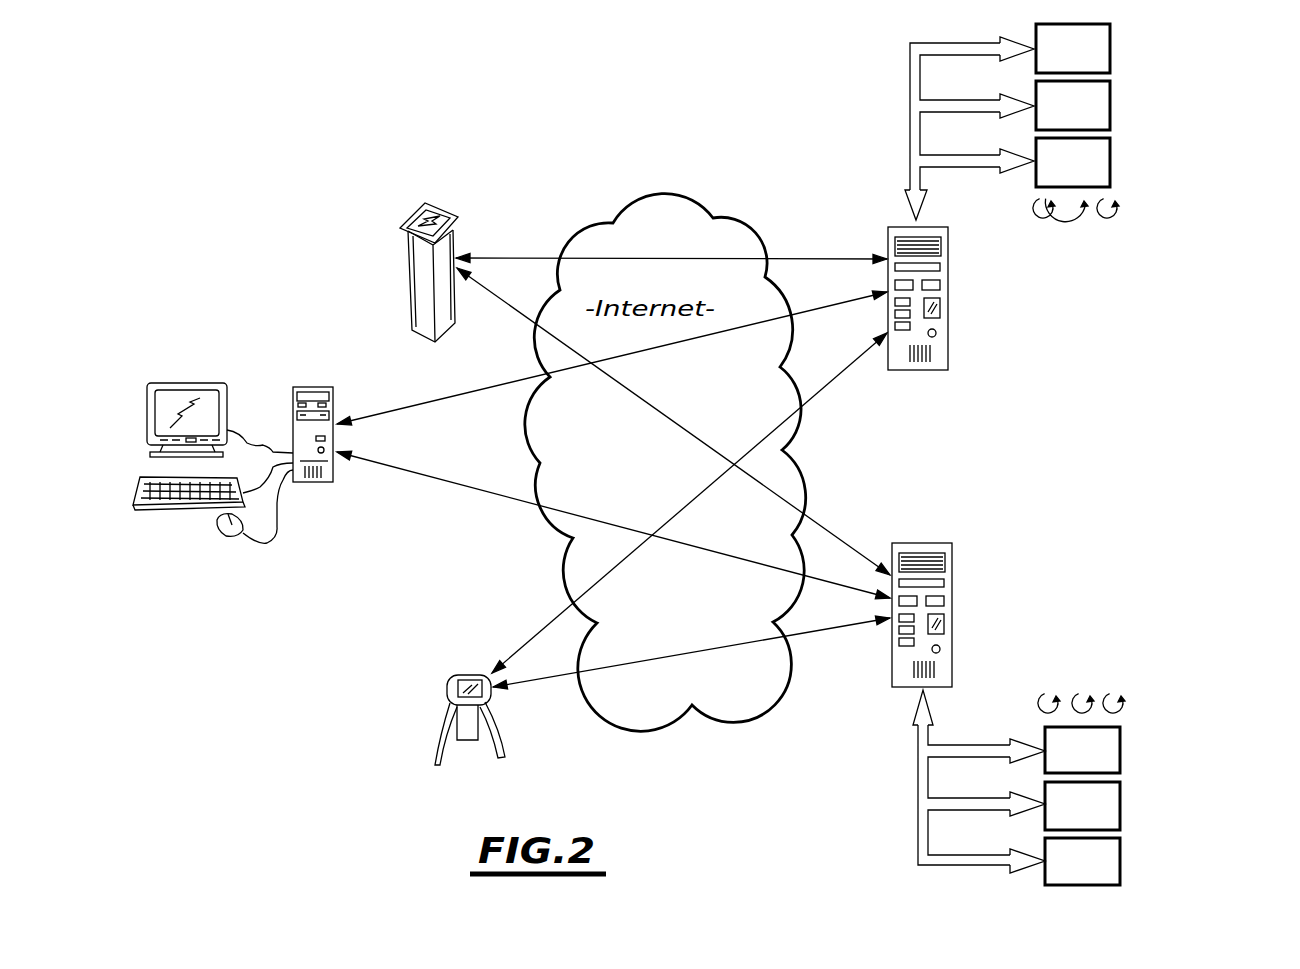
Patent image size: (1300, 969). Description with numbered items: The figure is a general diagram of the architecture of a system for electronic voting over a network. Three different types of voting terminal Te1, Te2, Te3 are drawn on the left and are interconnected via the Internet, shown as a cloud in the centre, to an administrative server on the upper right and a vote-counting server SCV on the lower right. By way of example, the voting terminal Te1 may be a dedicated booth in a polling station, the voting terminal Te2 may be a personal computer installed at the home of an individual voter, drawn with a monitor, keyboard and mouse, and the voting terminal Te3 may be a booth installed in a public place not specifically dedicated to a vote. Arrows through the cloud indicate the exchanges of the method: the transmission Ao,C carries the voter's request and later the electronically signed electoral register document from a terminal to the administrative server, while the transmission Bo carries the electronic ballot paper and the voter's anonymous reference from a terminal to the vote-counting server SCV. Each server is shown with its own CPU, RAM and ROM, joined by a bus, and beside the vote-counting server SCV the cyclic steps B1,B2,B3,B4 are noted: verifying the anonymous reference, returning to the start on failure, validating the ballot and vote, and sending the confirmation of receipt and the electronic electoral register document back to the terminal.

The voting terminal Te1 is at (407, 205).
The voting terminal Te2 is at (127, 362).
The voting terminal Te3 is at (448, 676).
The request transmission and signed electoral register transmission steps Ao,C is at (525, 258).
The ballot paper transmission step Bo is at (426, 402).
The vote-counting server SCV is at (952, 565).
The central processing unit CPU is at (1078, 454).
The random access memory RAM is at (1078, 455).
The read only memory ROM is at (1078, 455).
The vote-counting server steps B1,B2,B3,B4 is at (1036, 767).